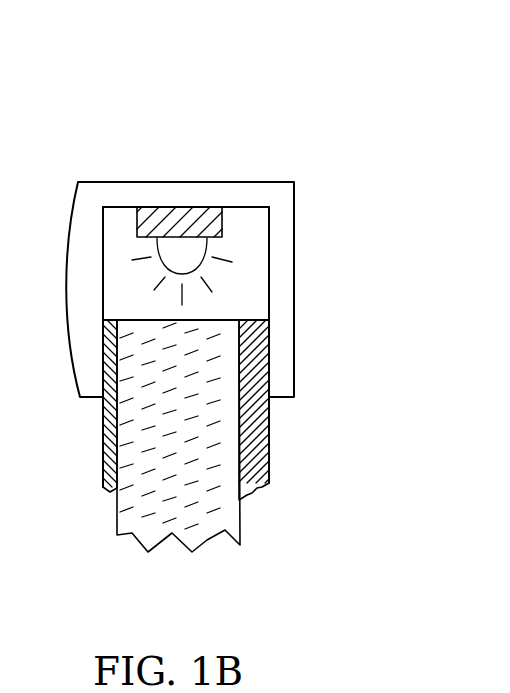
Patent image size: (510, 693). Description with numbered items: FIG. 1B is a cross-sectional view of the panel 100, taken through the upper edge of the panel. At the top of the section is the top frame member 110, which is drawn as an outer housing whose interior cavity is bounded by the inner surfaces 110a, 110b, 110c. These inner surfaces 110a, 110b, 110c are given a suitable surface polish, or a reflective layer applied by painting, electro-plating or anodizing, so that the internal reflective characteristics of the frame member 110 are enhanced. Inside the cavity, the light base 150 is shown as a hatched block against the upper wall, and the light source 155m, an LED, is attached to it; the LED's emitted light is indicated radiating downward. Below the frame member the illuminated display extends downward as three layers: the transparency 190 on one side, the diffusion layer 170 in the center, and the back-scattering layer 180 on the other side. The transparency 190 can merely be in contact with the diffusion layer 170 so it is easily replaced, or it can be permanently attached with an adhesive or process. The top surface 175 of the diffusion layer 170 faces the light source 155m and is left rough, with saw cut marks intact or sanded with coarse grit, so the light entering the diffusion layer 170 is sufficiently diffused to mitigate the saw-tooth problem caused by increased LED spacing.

The panel 100 is at (234, 100).
The top frame member 110 is at (232, 182).
The inner surface 110a is at (112, 221).
The inner surface 110b is at (128, 210).
The inner surface 110c is at (268, 225).
The light base 150 is at (153, 207).
The light source 155m is at (208, 248).
The surface of diffusion layer 175 is at (133, 320).
The transparency 190 is at (101, 443).
The back-scattering layer 180 is at (271, 453).
The diffusion layer 170 is at (240, 523).